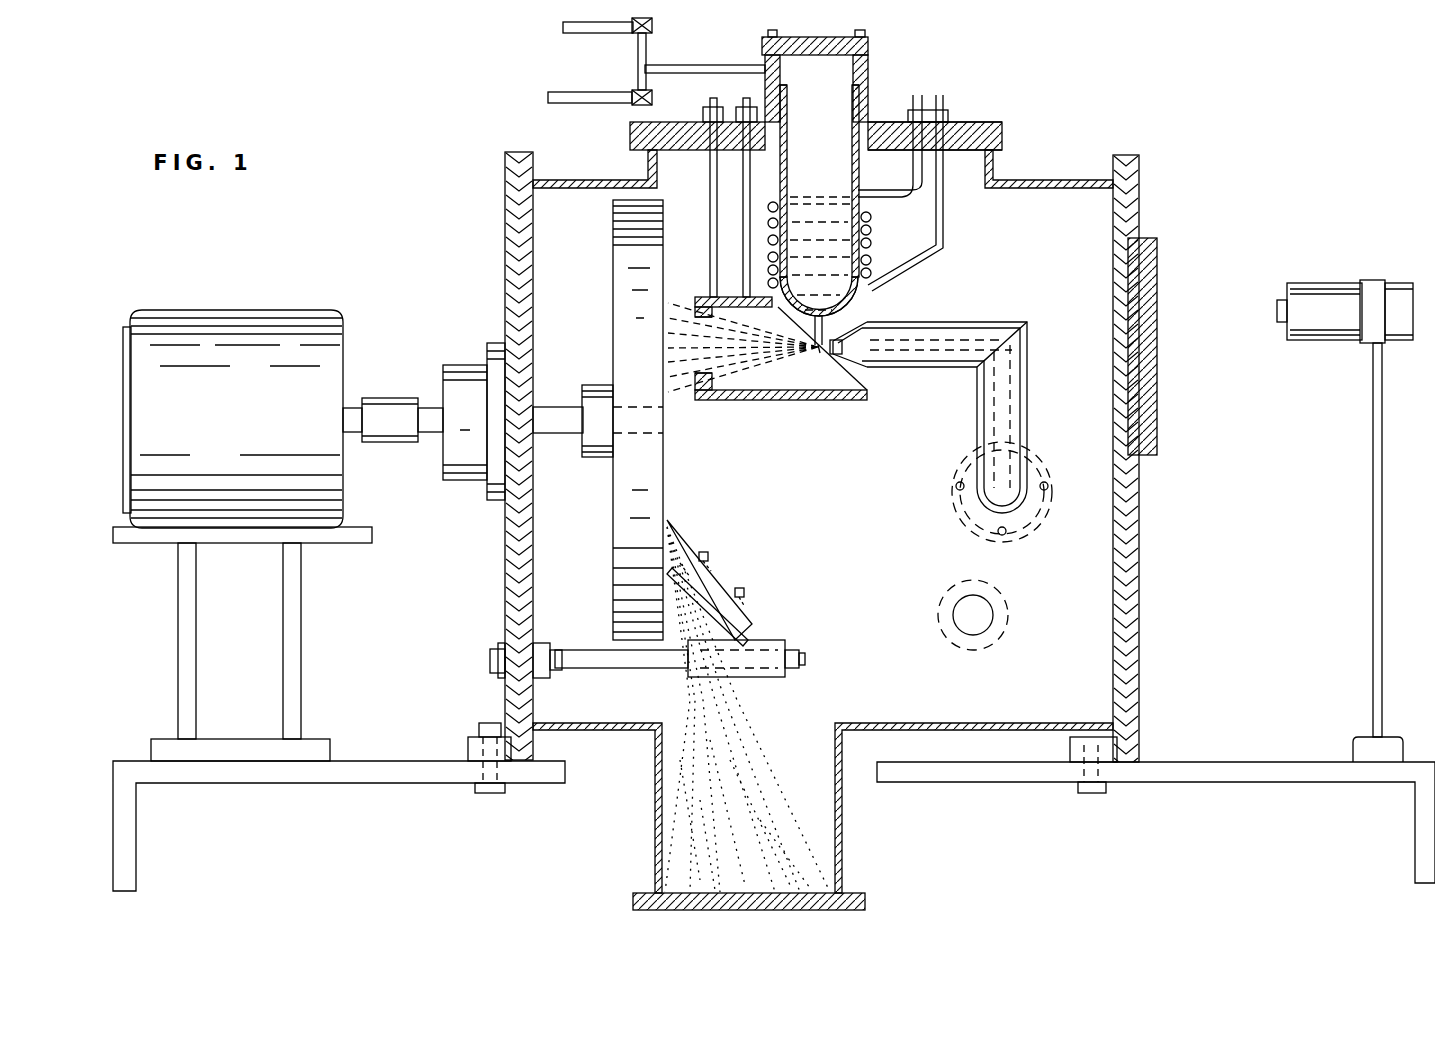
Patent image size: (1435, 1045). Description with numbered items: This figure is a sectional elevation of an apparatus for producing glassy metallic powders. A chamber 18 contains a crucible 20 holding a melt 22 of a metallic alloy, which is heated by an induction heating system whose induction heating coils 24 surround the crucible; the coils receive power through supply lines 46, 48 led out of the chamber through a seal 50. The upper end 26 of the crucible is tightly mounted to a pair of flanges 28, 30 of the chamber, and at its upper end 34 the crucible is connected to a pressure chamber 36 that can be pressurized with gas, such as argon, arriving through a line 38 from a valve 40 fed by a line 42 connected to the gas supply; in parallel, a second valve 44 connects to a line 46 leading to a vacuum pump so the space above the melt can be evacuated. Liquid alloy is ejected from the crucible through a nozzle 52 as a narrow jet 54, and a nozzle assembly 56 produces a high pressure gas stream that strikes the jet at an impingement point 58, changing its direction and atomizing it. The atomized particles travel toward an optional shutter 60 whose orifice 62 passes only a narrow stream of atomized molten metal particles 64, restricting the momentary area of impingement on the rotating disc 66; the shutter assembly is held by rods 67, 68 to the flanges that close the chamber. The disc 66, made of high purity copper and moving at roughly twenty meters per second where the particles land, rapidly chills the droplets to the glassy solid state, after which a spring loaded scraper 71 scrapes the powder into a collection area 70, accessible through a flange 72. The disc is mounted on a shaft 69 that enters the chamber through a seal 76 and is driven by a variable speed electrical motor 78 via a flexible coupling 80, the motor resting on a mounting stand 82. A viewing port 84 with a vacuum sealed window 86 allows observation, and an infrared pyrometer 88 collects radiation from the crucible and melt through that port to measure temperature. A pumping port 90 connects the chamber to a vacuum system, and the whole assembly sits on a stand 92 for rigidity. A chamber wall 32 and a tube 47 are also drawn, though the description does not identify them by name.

The chamber 18 is at (998, 264).
The crucible 20 is at (859, 295).
The melt 22 is at (806, 278).
The induction heating coils 24 is at (873, 243).
The upper end of the crucible 26 is at (858, 152).
The flange 28 is at (1003, 119).
The flange 30 is at (1003, 139).
The chamber wall 32 is at (1140, 621).
The upper end 34 is at (826, 113).
The pressure chamber 36 is at (835, 72).
The line 38 is at (725, 66).
The valve 40 is at (653, 26).
The line 42 is at (580, 30).
The second valve 44 is at (633, 98).
The line 46 is at (568, 92).
The tube 47 is at (925, 196).
The supply line 48 is at (948, 231).
The seal 50 is at (944, 112).
The nozzle 52 is at (836, 323).
The narrow jet 54 is at (815, 344).
The nozzle assembly 56 is at (842, 353).
The impingement point 58 is at (821, 353).
The shutter 60 is at (735, 401).
The orifice 62 is at (702, 373).
The atomized molten metal particles 64 is at (672, 307).
The rotating disc 66 is at (632, 325).
The rod 67 is at (742, 190).
The rod 68 is at (710, 178).
The shaft 69 is at (556, 405).
The collection area 70 is at (783, 793).
The spring loaded scraper 71 is at (685, 537).
The flange 72 is at (849, 888).
The seal 76 is at (466, 458).
The variable speed electrical motor 78 is at (203, 416).
The flexible coupling 80 is at (389, 400).
The mounting stand 82 is at (352, 546).
The viewing port 84 is at (1122, 418).
The vacuum sealed window 86 is at (1157, 412).
The infrared pyrometer 88 is at (1320, 320).
The pumping port 90 is at (971, 636).
The stand 92 is at (1249, 760).